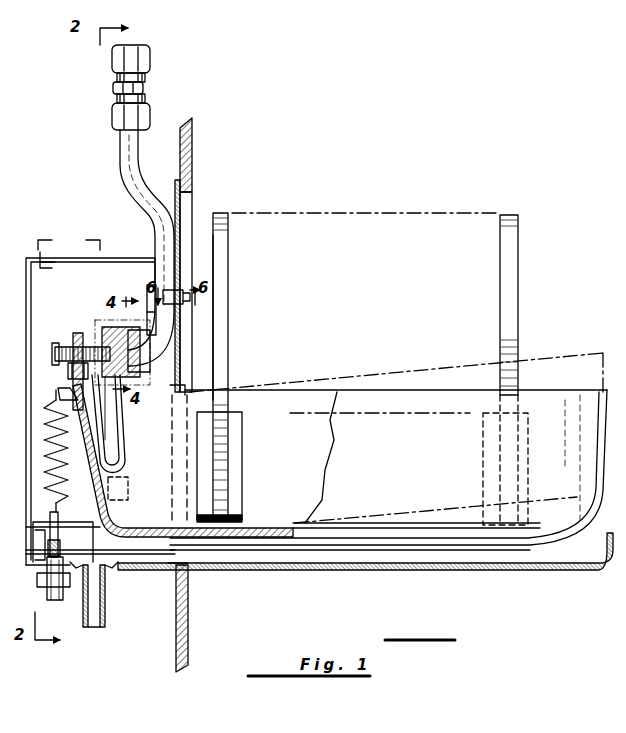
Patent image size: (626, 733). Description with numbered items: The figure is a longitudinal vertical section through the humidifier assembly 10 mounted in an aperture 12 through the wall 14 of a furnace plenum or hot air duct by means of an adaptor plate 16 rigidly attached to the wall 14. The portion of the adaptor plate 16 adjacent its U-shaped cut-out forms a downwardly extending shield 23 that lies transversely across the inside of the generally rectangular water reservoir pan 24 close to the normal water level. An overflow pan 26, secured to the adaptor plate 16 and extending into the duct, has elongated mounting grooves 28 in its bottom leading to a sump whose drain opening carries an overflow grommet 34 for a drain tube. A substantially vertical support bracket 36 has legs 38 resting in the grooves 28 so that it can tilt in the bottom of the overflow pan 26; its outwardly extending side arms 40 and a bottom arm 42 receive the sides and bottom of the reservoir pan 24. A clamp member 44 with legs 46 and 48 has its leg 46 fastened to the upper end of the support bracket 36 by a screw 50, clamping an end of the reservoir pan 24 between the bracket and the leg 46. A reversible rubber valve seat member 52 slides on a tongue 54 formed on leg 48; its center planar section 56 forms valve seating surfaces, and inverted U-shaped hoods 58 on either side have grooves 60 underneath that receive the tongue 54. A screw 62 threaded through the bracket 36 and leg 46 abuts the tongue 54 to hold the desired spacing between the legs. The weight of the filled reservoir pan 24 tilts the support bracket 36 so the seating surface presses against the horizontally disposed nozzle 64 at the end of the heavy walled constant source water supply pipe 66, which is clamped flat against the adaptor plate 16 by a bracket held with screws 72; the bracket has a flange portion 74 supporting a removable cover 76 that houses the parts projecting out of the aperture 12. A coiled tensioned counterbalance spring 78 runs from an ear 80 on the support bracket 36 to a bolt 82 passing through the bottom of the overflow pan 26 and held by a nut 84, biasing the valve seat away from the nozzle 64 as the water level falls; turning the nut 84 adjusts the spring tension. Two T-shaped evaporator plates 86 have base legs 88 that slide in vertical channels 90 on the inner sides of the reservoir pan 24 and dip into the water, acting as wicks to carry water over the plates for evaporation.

The humidifier assembly 10 is at (60, 240).
The aperture 12 is at (193, 203).
The wall 14 is at (193, 133).
The adaptor plate 16 is at (176, 580).
The shield 23 is at (183, 388).
The water reservoir pan 24 is at (286, 395).
The overflow pan 26 is at (296, 570).
The mounting grooves 28 is at (104, 574).
The overflow grommet 34 is at (104, 602).
The support bracket 36 is at (88, 468).
The legs 38 is at (63, 542).
The side arms 40 is at (130, 489).
The bottom arm 42 is at (125, 538).
The clamp member 44 is at (128, 463).
The leg 46 is at (112, 420).
The leg 48 is at (120, 442).
The screw 50 is at (68, 374).
The valve seat member 52 is at (100, 327).
The tongue 54 is at (100, 338).
The center planar section 56 is at (130, 378).
The hoods 58 is at (144, 310).
The grooves 60 is at (170, 338).
The screw 62 is at (66, 346).
The nozzle 64 is at (165, 362).
The water supply pipe 66 is at (120, 170).
The screws 72 is at (178, 292).
The flange portion 74 is at (44, 262).
The removable cover 76 is at (30, 312).
The counterbalance spring 78 is at (44, 462).
The ear 80 is at (64, 402).
The bolt 82 is at (62, 540).
The nut 84 is at (63, 600).
The evaporator plates 86 is at (232, 258).
The base leg 88 is at (225, 430).
The channels 90 is at (228, 462).